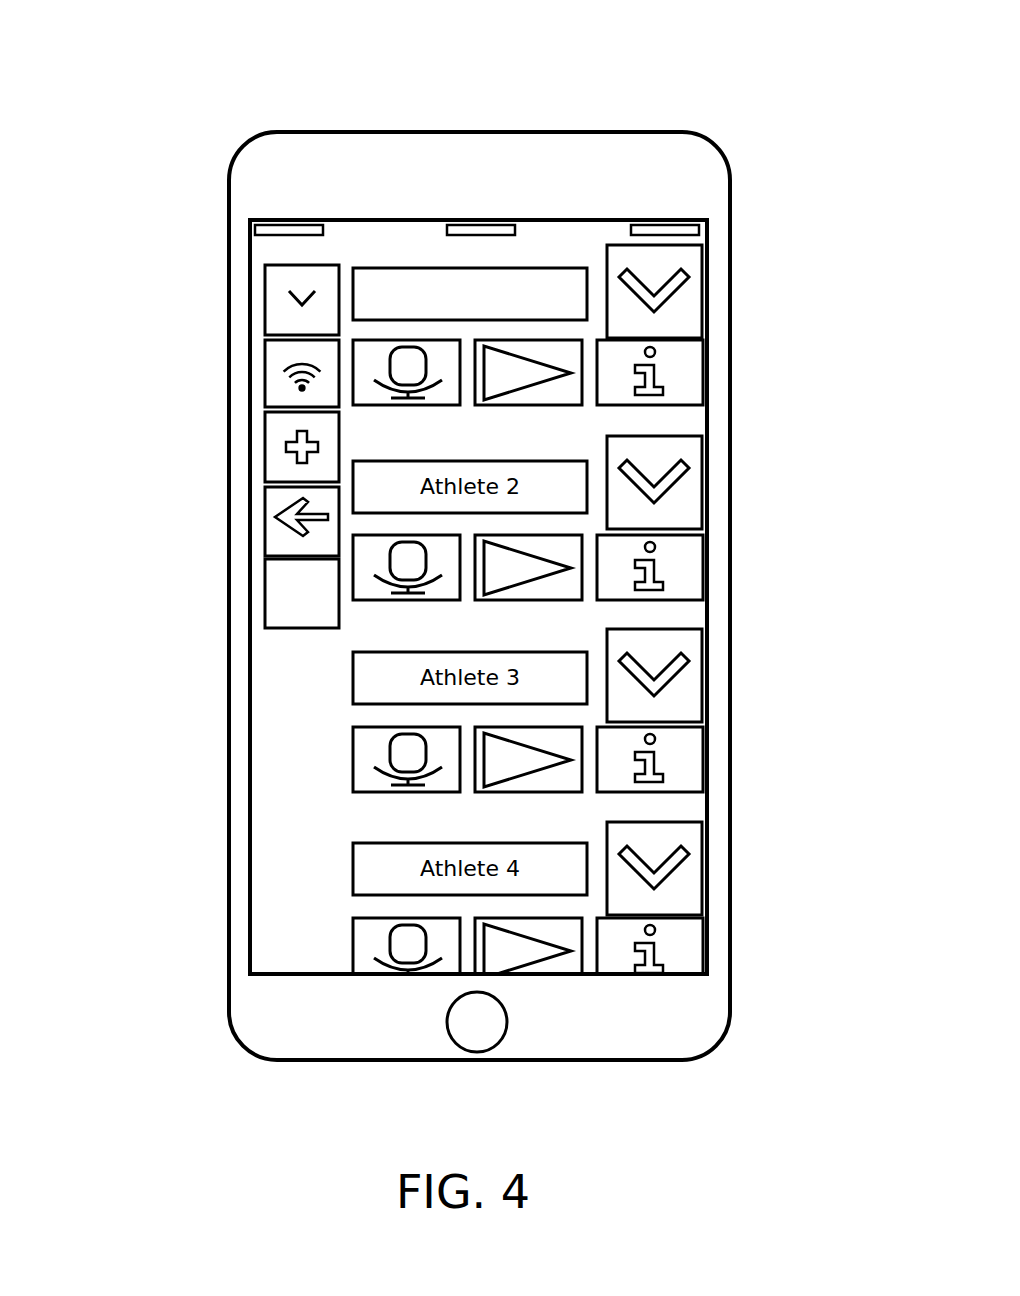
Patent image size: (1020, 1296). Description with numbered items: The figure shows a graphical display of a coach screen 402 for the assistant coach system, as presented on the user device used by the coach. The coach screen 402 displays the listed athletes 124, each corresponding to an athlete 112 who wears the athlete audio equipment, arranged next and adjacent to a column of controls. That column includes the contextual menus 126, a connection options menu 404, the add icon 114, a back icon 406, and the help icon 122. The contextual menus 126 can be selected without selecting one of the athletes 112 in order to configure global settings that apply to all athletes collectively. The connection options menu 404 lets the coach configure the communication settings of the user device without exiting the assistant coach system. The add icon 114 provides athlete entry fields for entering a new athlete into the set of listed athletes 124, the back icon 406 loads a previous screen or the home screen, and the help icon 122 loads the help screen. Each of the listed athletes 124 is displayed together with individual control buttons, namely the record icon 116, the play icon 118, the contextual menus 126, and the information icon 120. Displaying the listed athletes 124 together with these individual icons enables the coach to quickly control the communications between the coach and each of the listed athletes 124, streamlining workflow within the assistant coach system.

The coach screen 402 is at (106, 40).
The listed athletes 124 is at (427, 244).
The athlete 112 is at (558, 285).
The contextual menus 126 is at (276, 298).
The connection options menu 404 is at (276, 364).
The add icon 114 is at (276, 431).
The back icon 406 is at (276, 498).
The record icon 116 is at (364, 568).
The help icon 122 is at (276, 613).
The play icon 118 is at (558, 541).
The information icon 120 is at (693, 585).